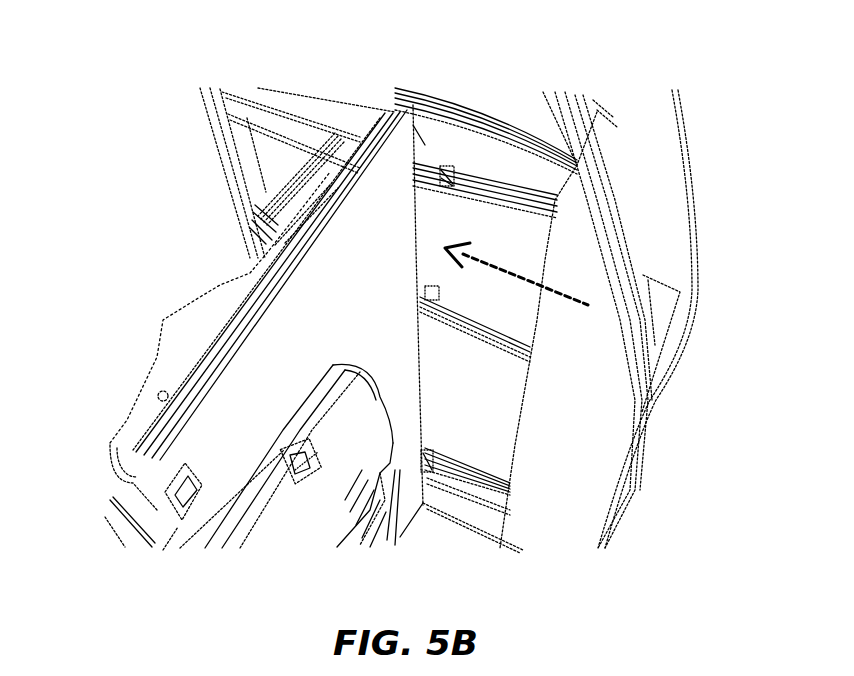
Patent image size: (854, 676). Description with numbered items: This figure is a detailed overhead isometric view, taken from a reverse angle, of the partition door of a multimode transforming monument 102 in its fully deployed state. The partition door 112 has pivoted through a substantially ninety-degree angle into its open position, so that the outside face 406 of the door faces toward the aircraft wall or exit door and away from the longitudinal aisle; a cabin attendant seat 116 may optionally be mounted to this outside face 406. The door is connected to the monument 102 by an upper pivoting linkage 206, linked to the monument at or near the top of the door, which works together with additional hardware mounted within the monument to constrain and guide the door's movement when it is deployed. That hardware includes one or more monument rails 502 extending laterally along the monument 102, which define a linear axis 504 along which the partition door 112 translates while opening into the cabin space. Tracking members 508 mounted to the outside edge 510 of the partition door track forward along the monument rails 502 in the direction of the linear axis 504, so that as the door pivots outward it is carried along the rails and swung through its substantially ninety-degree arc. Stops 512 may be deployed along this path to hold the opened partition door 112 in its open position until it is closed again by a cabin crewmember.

The monument 102 is at (98, 94).
The upper pivoting linkage 206 is at (348, 108).
The partition door 112 is at (207, 340).
The cabin attendant seat 116 is at (328, 502).
The outside face 406 is at (243, 432).
The monument rail 502 is at (527, 203).
The linear axis 504 is at (530, 275).
The tracking member 508 is at (428, 180).
The outside edge 510 is at (422, 388).
The stop 512 is at (440, 305).